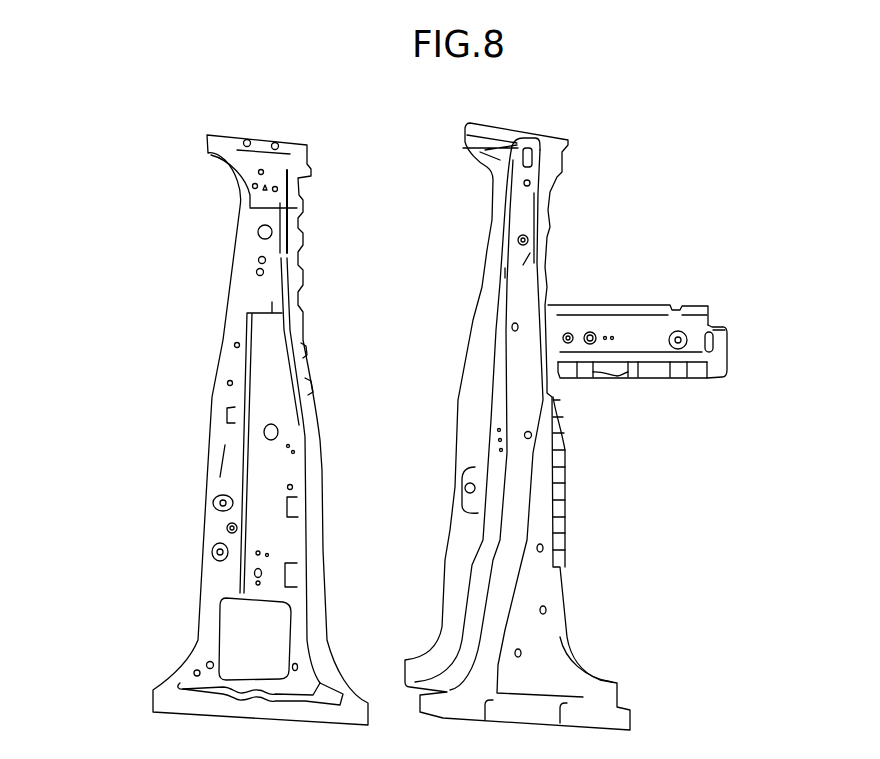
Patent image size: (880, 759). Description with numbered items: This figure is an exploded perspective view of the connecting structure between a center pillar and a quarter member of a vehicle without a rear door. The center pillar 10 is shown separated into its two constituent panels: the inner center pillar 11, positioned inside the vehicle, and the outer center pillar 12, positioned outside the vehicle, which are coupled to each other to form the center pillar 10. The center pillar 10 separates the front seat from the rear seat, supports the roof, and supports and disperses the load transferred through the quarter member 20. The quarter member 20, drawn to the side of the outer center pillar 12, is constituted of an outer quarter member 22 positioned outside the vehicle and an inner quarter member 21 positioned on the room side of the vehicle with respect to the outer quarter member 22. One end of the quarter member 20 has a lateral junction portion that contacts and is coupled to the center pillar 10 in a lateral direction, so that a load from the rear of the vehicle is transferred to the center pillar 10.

The center pillar 10 is at (82, 220).
The inner center pillar 11 is at (268, 375).
The outer center pillar 12 is at (505, 273).
The quarter member 20 is at (817, 240).
The inner quarter member 21 is at (642, 333).
The outer quarter member 22 is at (725, 338).